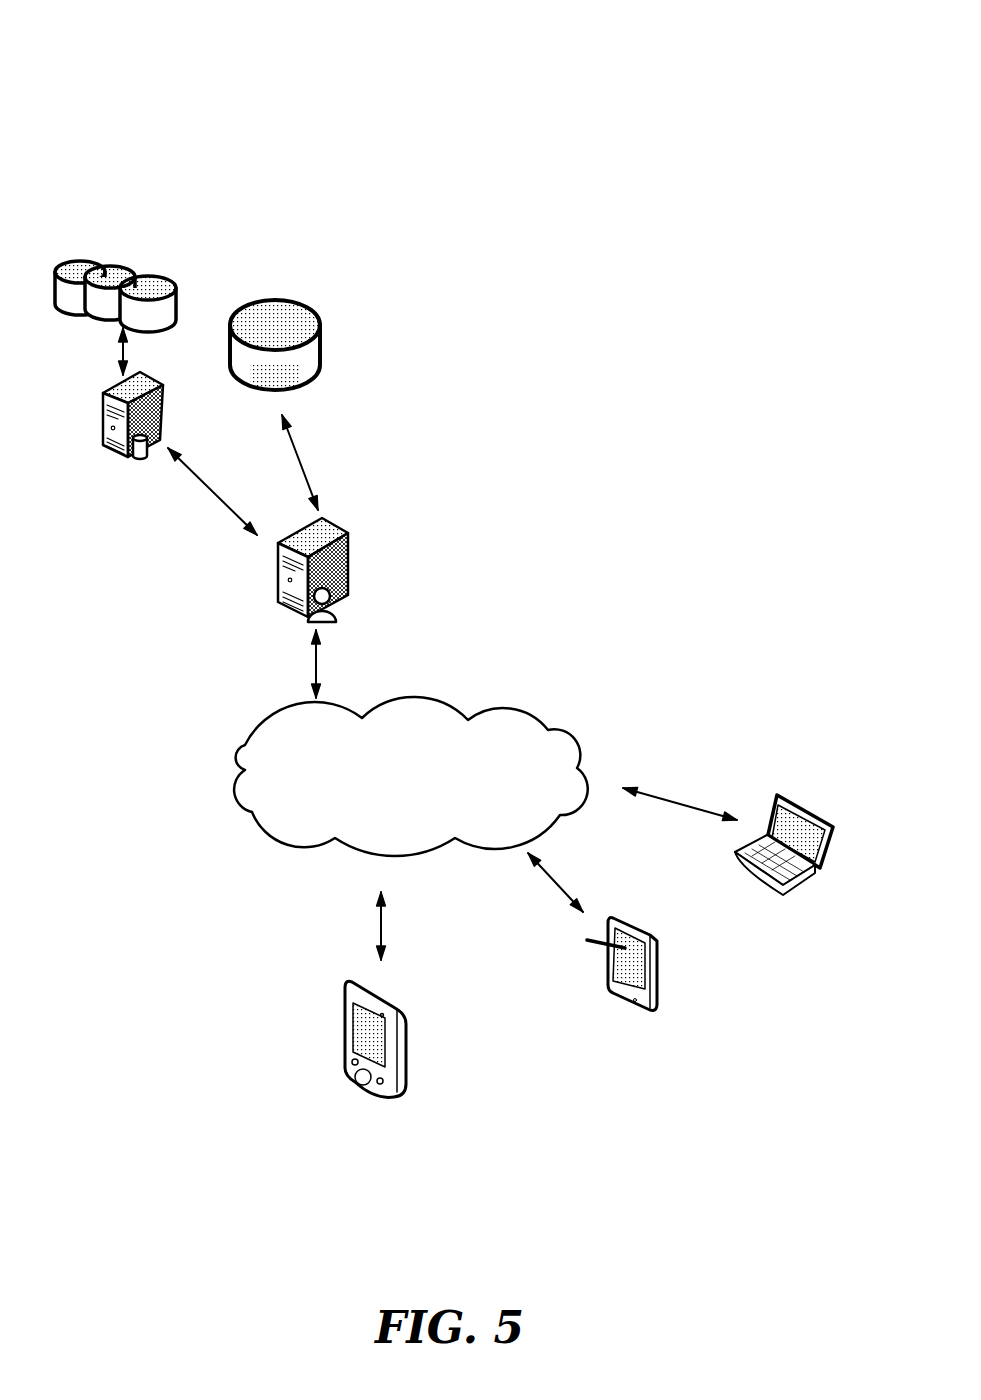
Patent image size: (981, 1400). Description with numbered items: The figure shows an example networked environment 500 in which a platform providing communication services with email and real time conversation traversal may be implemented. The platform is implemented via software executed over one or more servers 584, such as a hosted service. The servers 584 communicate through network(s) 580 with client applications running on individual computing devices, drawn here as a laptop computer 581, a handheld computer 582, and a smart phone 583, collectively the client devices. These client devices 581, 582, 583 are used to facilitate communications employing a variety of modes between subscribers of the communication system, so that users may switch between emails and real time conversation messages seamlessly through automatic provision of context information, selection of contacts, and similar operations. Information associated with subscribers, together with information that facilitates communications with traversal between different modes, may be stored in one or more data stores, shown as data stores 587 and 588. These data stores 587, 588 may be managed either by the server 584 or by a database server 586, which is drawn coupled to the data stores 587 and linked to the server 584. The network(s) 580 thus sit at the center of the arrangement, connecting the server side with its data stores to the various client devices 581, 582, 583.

The networked environment 500 is at (762, 67).
The network(s) 580 is at (411, 776).
The laptop computer 581 is at (813, 795).
The handheld computer 582 is at (633, 910).
The smart phone 583 is at (407, 985).
The server 584 is at (270, 607).
The database server 586 is at (140, 460).
The data store 587 is at (132, 253).
The data store 588 is at (272, 282).